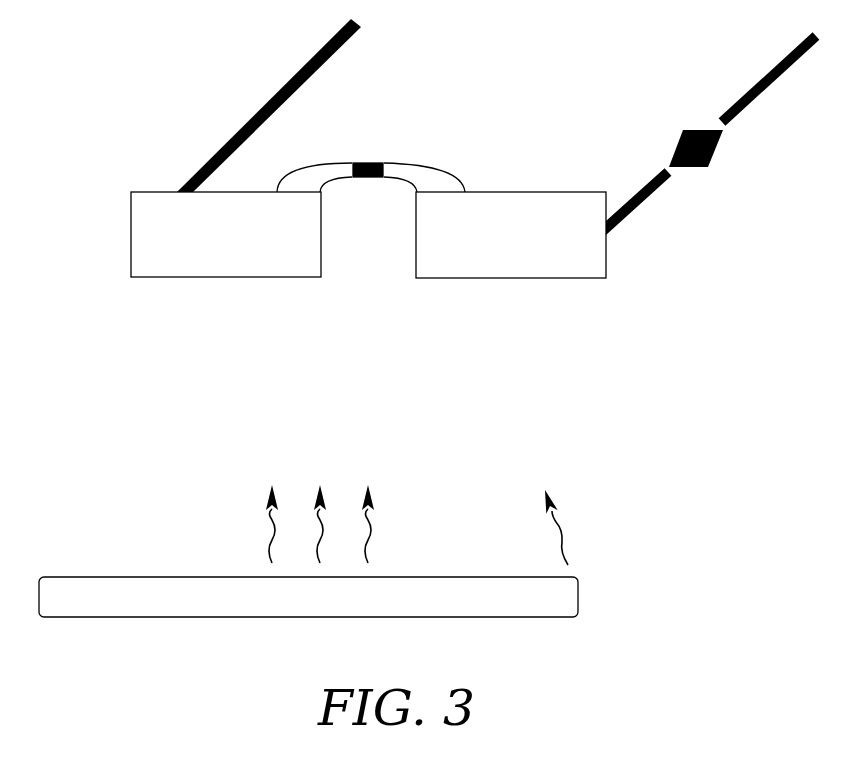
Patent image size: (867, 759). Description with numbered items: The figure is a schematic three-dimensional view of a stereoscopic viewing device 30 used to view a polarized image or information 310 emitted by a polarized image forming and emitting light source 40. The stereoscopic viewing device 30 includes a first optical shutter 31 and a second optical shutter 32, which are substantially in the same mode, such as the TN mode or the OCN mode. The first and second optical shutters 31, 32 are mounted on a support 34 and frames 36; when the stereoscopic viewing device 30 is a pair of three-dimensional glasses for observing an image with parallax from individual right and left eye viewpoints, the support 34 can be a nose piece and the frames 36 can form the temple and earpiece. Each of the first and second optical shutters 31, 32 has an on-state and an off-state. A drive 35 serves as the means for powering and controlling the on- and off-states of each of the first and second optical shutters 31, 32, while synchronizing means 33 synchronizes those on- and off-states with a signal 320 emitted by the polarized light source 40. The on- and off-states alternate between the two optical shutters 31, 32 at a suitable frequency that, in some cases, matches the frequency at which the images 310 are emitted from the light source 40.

The stereoscopic viewing device 30 is at (115, 58).
The first optical shutter 31 is at (582, 265).
The second optical shutter 32 is at (152, 266).
The synchronizing means 33 is at (365, 178).
The support 34 is at (422, 172).
The drive 35 is at (717, 148).
The frames 36 is at (257, 116).
The polarized image forming and emitting light source 40 is at (99, 588).
The polarized image 310 is at (268, 530).
The signal 320 is at (564, 543).